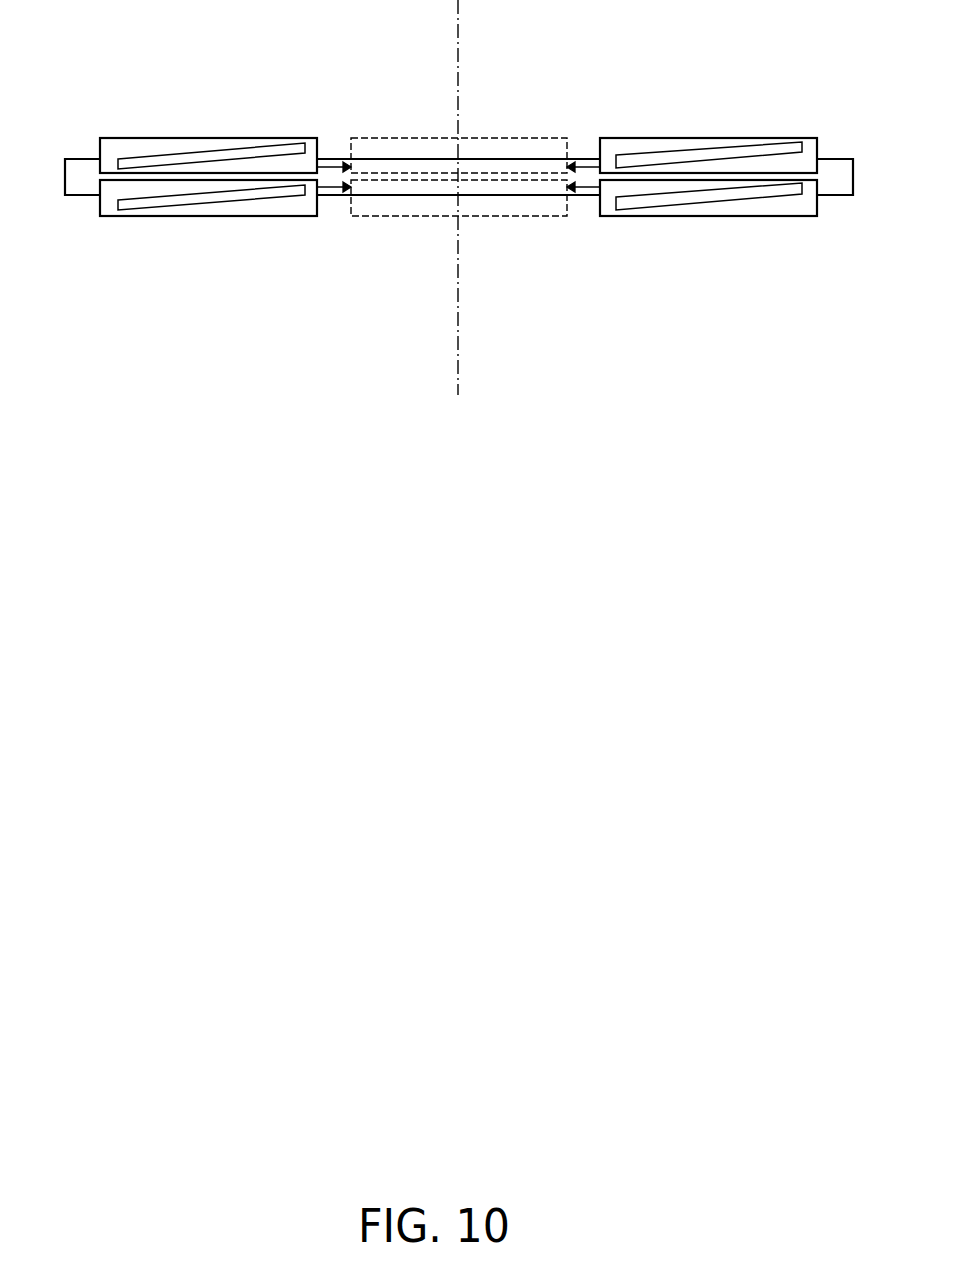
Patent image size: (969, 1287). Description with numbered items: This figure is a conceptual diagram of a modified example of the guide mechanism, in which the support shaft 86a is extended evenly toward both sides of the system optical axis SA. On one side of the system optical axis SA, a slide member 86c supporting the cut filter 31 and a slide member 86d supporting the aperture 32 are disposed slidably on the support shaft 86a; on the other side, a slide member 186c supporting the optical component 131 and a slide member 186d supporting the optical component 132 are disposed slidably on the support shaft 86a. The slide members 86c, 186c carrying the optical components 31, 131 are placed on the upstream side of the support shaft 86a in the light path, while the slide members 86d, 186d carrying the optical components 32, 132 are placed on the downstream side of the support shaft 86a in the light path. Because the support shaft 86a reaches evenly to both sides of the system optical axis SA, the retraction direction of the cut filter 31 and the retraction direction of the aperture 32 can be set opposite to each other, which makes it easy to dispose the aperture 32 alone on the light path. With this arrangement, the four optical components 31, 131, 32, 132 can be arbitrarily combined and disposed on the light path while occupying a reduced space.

The cut filter 31 is at (134, 208).
The aperture 32 is at (138, 163).
The support shaft 86a is at (328, 153).
The slide member 86c is at (252, 208).
The slide member 86d is at (232, 145).
The optical component 131 is at (640, 200).
The optical component 132 is at (657, 153).
The slide member 186c is at (783, 210).
The slide member 186d is at (757, 143).
The system optical axis SA is at (460, 276).